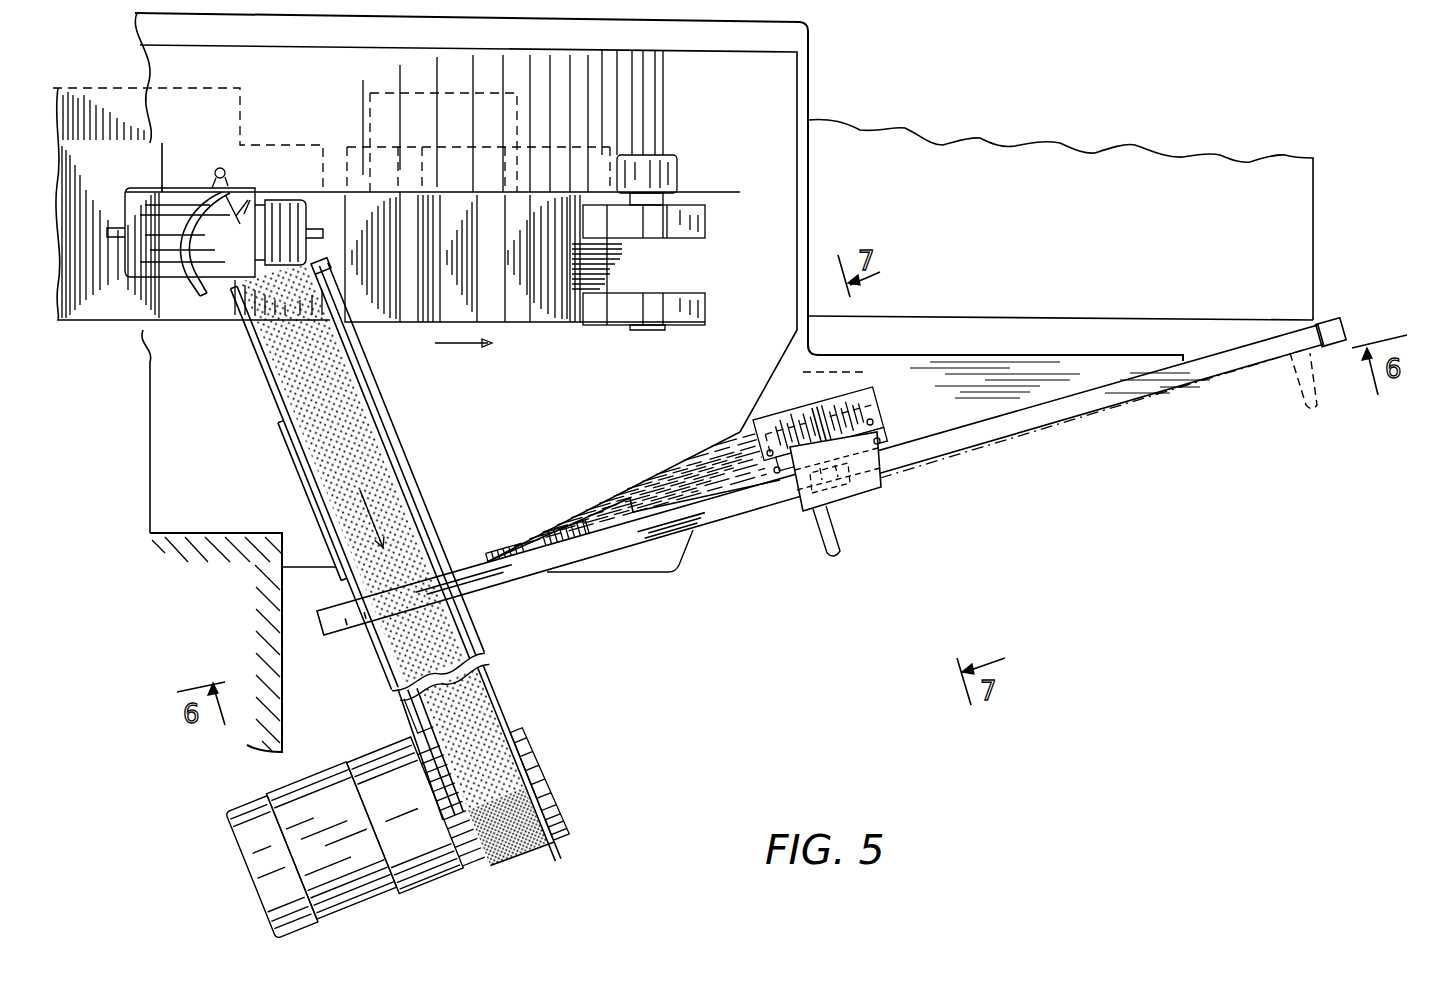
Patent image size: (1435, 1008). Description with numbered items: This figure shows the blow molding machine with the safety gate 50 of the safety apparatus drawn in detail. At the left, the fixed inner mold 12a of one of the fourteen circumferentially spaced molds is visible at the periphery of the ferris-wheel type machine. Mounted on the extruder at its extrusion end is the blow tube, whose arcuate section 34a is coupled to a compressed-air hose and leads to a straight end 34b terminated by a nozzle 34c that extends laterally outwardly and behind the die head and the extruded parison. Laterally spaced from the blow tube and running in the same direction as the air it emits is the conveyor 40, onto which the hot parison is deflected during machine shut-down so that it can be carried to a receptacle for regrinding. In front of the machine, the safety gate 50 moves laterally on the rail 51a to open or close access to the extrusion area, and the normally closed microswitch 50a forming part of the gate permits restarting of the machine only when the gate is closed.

The fixed inner mold 12a is at (132, 295).
The arcuate section 34a is at (207, 300).
The straight end 34b is at (225, 168).
The nozzle 34c is at (313, 184).
The conveyor 40 is at (455, 635).
The safety gate 50 is at (741, 516).
The normally closed microswitch 50a is at (853, 488).
The rail 51a is at (998, 424).